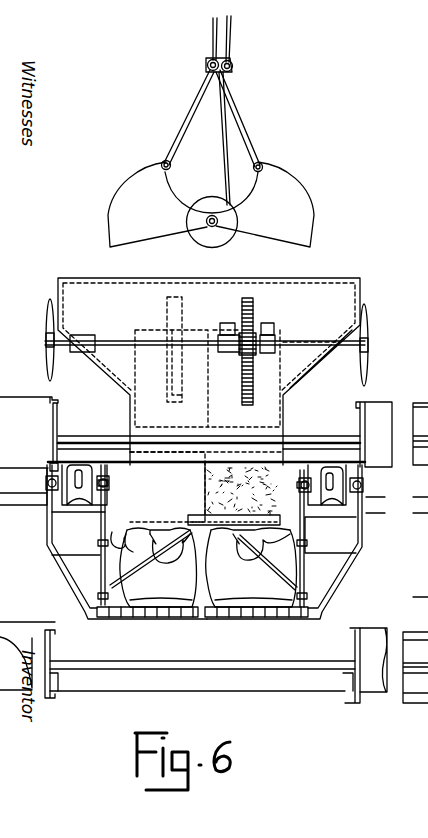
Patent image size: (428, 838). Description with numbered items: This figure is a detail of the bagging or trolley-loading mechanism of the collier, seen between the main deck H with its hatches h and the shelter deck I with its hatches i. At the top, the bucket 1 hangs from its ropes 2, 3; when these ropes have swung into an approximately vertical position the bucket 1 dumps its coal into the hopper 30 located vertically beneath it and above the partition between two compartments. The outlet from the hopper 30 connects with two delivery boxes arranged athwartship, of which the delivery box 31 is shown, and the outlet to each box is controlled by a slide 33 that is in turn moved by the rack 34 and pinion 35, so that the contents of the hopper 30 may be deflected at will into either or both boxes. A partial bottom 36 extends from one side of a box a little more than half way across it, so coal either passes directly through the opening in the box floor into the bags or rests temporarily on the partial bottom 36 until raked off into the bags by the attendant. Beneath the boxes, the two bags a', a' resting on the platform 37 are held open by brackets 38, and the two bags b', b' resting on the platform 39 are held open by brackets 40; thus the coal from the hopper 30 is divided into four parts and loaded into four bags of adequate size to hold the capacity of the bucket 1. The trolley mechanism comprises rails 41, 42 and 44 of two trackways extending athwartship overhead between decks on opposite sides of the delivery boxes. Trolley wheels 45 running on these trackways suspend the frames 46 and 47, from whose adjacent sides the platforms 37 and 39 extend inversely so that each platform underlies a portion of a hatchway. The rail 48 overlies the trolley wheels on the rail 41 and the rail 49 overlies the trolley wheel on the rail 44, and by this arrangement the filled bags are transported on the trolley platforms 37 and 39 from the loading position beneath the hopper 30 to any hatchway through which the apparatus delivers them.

The bucket 1 is at (300, 210).
The hoisting rope 2 is at (213, 27).
The closing rope 3 is at (221, 132).
The hopper 30 is at (206, 371).
The rack 34 is at (253, 312).
The slide 33 is at (263, 384).
The rail 49 is at (365, 467).
The hatch of shelter deck i is at (40, 424).
The shelter deck I is at (297, 440).
The rail 48 is at (50, 464).
The trolley wheels 45 is at (46, 482).
The rail 41 is at (50, 508).
The rail 42 is at (102, 510).
The brackets 38 is at (122, 538).
The frame 46 is at (50, 555).
The delivery box 31 is at (203, 487).
The partial bottom 36 is at (267, 517).
The rail 44 is at (358, 512).
The brackets 40 is at (290, 574).
The frame 47 is at (338, 588).
The bags a' is at (158, 567).
The bags b' is at (251, 567).
The platform 37 is at (168, 610).
The platform 39 is at (260, 610).
The main deck H is at (177, 667).
The hatch of main deck h is at (23, 640).
The pinion 35 is at (418, 612).